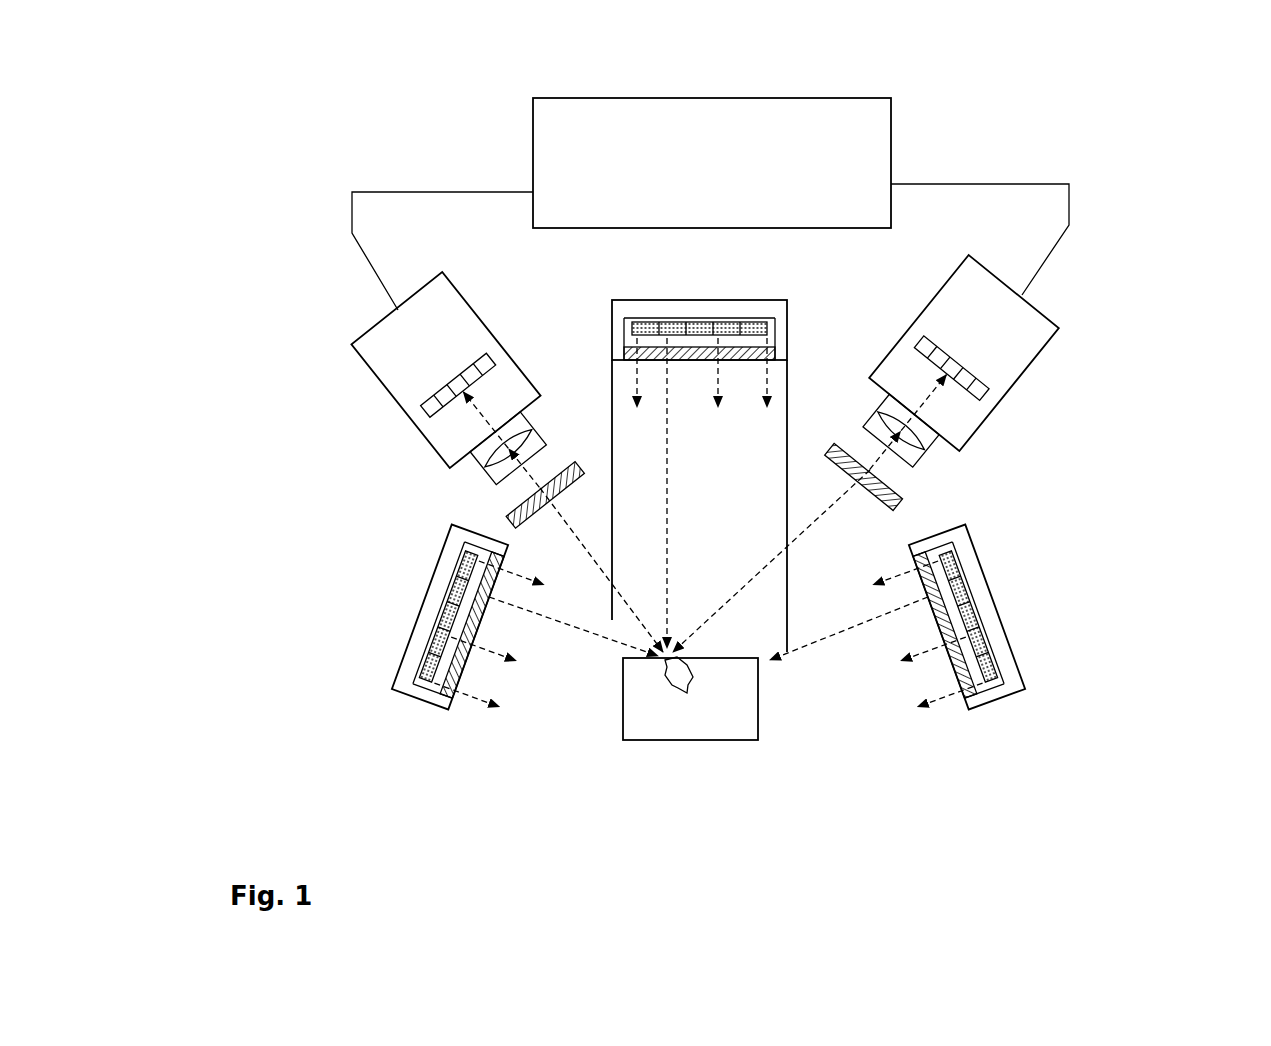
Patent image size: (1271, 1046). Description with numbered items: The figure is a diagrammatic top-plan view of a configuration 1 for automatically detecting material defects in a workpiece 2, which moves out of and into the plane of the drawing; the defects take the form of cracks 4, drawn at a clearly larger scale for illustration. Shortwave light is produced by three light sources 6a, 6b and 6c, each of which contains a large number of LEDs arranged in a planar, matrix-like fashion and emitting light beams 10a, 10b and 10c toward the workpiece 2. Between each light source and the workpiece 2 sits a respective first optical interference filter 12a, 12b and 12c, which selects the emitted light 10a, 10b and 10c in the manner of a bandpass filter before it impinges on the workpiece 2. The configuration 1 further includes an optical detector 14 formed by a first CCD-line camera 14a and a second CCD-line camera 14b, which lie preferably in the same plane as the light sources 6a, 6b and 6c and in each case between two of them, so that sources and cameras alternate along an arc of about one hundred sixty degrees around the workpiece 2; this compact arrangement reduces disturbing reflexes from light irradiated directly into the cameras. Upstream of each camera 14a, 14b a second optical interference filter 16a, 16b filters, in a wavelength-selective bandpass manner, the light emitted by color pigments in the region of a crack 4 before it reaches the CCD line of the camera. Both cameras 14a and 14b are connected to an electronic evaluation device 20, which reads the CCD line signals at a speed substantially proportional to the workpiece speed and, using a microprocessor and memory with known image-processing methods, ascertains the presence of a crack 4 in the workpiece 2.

The configuration 1 is at (1118, 165).
The workpiece 2 is at (713, 725).
The crack 4 is at (670, 678).
The light source 6a is at (403, 657).
The light source 6b is at (734, 450).
The light source 6c is at (992, 660).
The light beam 10a is at (563, 620).
The light beam 10b is at (667, 415).
The light beam 10c is at (832, 640).
The first optical interference filter 12a is at (465, 560).
The first optical interference filter 12b is at (740, 351).
The first optical interference filter 12c is at (993, 642).
The optical detector 14 is at (718, 369).
The first CCD-line camera 14a is at (409, 373).
The second CCD-line camera 14b is at (1013, 360).
The second optical interference filter 16a is at (545, 495).
The second optical interference filter 16b is at (864, 476).
The electronic evaluation device 20 is at (706, 163).